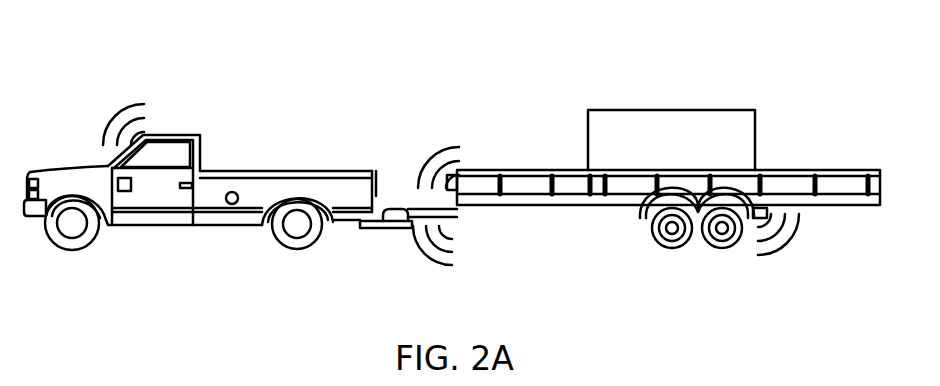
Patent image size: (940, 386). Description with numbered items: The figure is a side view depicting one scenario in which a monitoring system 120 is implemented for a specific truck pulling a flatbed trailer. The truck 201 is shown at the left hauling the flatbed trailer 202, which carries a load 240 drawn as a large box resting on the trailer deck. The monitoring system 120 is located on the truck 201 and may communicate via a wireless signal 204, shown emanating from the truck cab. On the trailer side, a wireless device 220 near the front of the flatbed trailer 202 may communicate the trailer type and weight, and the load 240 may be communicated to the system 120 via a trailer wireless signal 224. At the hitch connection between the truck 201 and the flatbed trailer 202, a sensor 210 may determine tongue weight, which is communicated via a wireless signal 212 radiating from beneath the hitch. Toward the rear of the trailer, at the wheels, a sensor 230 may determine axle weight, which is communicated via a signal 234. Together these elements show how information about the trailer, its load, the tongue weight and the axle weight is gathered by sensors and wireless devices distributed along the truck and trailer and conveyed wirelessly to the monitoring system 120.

The monitoring system 120 is at (126, 193).
The truck 201 is at (253, 187).
The flatbed trailer 202 is at (841, 168).
The wireless signal 204 is at (112, 112).
The sensor 210 is at (385, 222).
The wireless signal 212 is at (447, 238).
The wireless device 220 is at (418, 185).
The trailer wireless signal 224 is at (455, 145).
The sensor 230 is at (757, 215).
The signal 234 is at (800, 215).
The load 240 is at (713, 130).